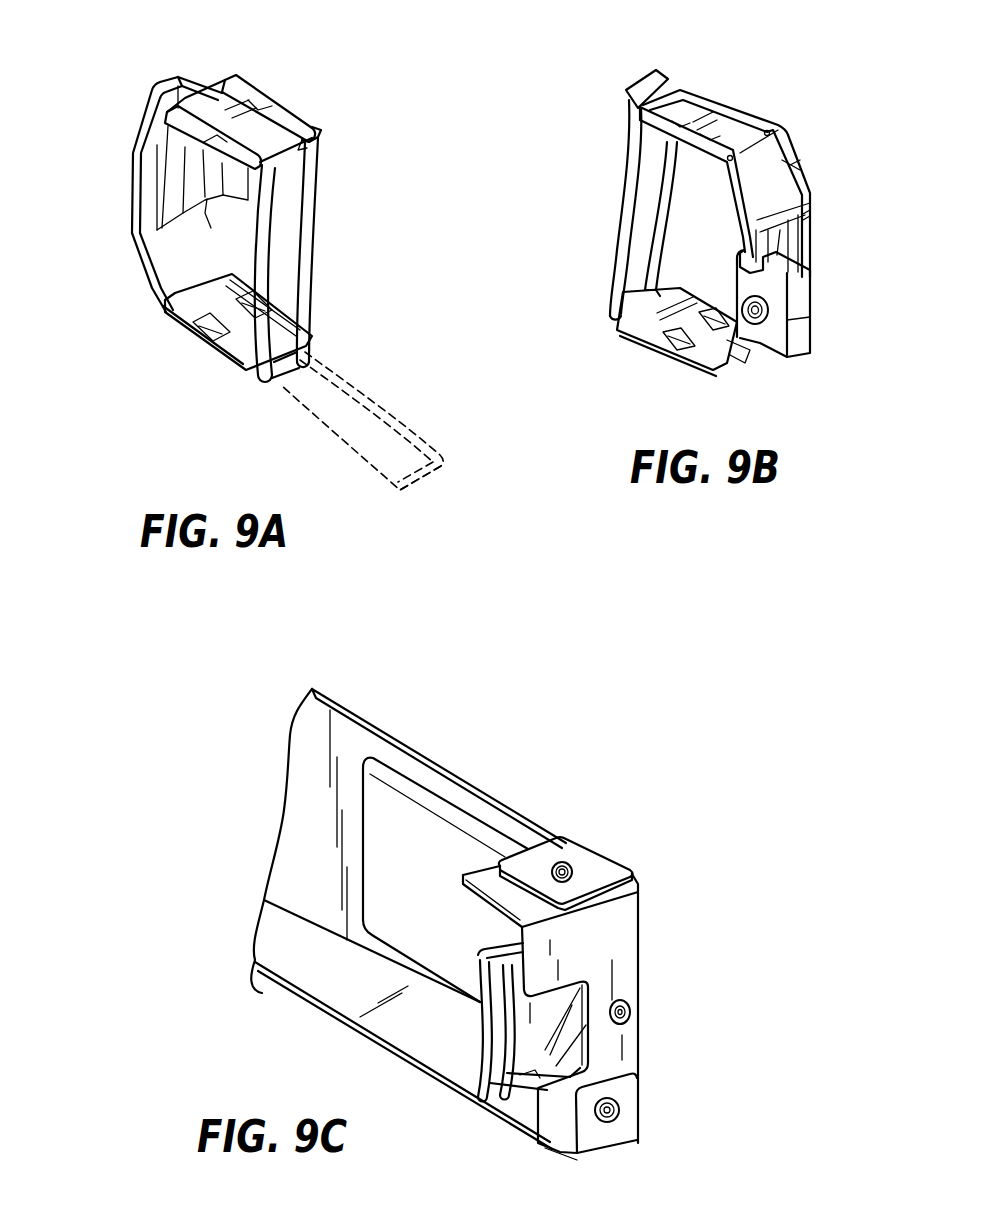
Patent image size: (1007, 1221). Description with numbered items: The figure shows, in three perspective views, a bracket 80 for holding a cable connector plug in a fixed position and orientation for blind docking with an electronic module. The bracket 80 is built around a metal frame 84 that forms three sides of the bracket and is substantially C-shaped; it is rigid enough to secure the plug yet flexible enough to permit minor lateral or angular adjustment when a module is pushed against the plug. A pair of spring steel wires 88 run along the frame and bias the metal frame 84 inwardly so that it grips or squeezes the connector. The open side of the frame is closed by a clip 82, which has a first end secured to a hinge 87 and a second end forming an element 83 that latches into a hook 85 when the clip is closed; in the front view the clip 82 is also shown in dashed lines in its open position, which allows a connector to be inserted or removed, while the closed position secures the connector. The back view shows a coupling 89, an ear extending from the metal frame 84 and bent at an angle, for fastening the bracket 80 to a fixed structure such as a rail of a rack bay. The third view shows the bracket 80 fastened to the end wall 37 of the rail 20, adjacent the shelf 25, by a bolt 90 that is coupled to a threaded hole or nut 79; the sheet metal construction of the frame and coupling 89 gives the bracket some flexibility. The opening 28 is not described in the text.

In FIG. 9C, the rail 20 is at (588, 833).
In FIG. 9C, the shelf 25 is at (296, 980).
In FIG. 9C, the window opening 28 is at (440, 832).
In FIG. 9C, the end wall 37 is at (630, 940).
In FIG. 9B, the threaded hole or nut 79 is at (755, 322).
In FIG. 9A, the bracket 80 is at (132, 96).
In FIG. 9B, the bracket 80 is at (606, 96).
In FIG. 9C, the bracket 80 is at (466, 1051).
In FIG. 9A, the clip 82 is at (306, 222).
In FIG. 9B, the clip 82 is at (633, 200).
In FIG. 9A, the element 83 is at (432, 478).
In FIG. 9B, the element 83 is at (664, 88).
In FIG. 9A, the metal frame 84 is at (143, 196).
In FIG. 9B, the metal frame 84 is at (770, 122).
In FIG. 9A, the hook 85 is at (316, 127).
In FIG. 9B, the hook 85 is at (645, 80).
In FIG. 9A, the hinge 87 is at (314, 368).
In FIG. 9A, the spring steel wires 88 is at (205, 98).
In FIG. 9B, the spring steel wires 88 is at (790, 162).
In FIG. 9B, the coupling 89 is at (810, 318).
In FIG. 9C, the bolt 90 is at (631, 1013).